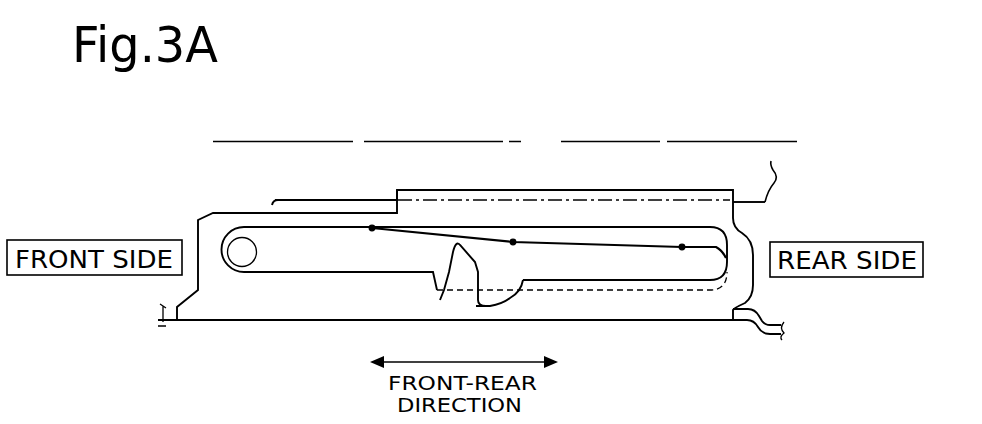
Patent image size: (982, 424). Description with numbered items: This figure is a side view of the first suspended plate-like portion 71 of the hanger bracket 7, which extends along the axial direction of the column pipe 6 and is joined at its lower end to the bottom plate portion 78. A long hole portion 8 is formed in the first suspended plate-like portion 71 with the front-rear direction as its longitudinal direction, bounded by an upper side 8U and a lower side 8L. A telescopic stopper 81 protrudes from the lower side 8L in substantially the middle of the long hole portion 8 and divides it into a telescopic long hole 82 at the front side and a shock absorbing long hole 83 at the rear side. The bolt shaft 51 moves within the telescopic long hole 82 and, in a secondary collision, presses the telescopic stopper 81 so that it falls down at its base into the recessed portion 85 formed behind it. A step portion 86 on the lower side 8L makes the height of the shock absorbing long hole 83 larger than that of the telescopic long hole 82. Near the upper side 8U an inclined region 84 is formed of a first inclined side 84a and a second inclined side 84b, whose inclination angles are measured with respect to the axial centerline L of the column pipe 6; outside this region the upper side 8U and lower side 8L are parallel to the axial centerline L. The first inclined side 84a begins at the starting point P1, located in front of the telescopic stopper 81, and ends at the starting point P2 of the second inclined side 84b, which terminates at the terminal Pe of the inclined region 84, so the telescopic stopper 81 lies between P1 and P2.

The column pipe 6 is at (777, 178).
The hanger bracket 7 is at (664, 328).
The long hole portion 8 is at (316, 263).
The upper side 8U is at (311, 228).
The lower side 8L is at (572, 272).
The bolt shaft 51 is at (257, 250).
The first suspended plate-like portion 71 is at (693, 303).
The bottom plate portion 78 is at (328, 321).
The telescopic stopper 81 is at (467, 262).
The telescopic long hole 82 is at (341, 260).
The shock absorbing long hole 83 is at (628, 265).
The inclined region 84 is at (630, 161).
The first inclined side 84a is at (421, 233).
The second inclined side 84b is at (594, 243).
The recessed portion 85 is at (497, 301).
The step portion 86 is at (442, 287).
The axial centerline L is at (678, 140).
The starting point P1 is at (368, 242).
The starting point P2 is at (516, 255).
The terminal Pe is at (682, 259).